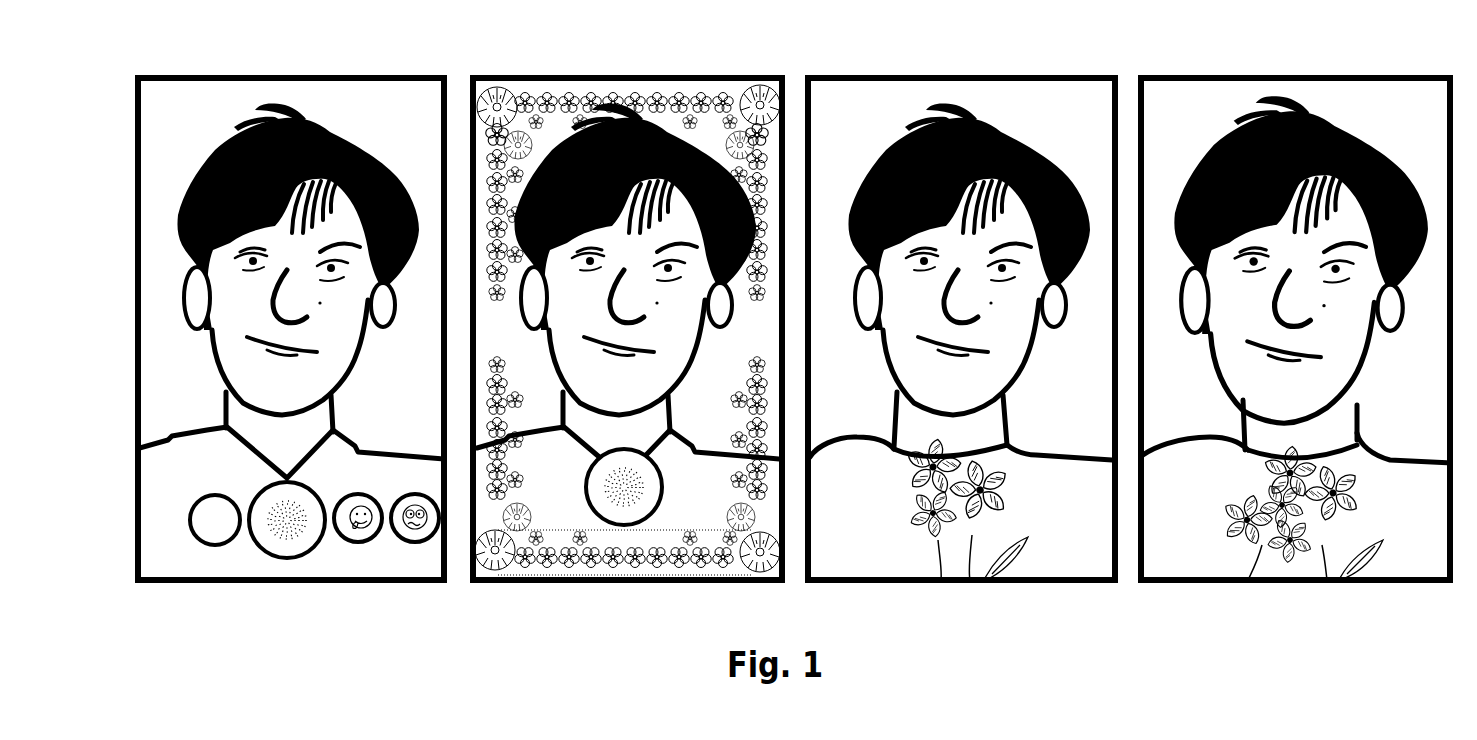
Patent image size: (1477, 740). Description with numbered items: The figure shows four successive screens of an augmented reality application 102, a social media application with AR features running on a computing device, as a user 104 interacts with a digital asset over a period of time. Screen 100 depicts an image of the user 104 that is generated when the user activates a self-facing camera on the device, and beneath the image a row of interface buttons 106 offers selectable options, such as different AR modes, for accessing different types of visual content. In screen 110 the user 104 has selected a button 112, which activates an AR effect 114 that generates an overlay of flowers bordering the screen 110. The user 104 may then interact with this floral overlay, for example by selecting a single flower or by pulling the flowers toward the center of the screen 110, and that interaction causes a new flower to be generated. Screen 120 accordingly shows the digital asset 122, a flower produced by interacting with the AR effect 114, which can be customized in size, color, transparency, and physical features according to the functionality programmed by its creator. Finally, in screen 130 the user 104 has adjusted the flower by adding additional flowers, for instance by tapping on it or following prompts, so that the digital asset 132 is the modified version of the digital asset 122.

The screen 100 is at (309, 56).
The application 102 is at (187, 84).
The user 104 is at (188, 198).
The interface buttons 106 is at (410, 545).
The screen 110 is at (645, 56).
The button 112 is at (621, 532).
The AR effect 114 is at (497, 570).
The screen 120 is at (979, 56).
The digital asset 122 is at (940, 572).
The screen 130 is at (1313, 56).
The digital asset 132 is at (1255, 568).